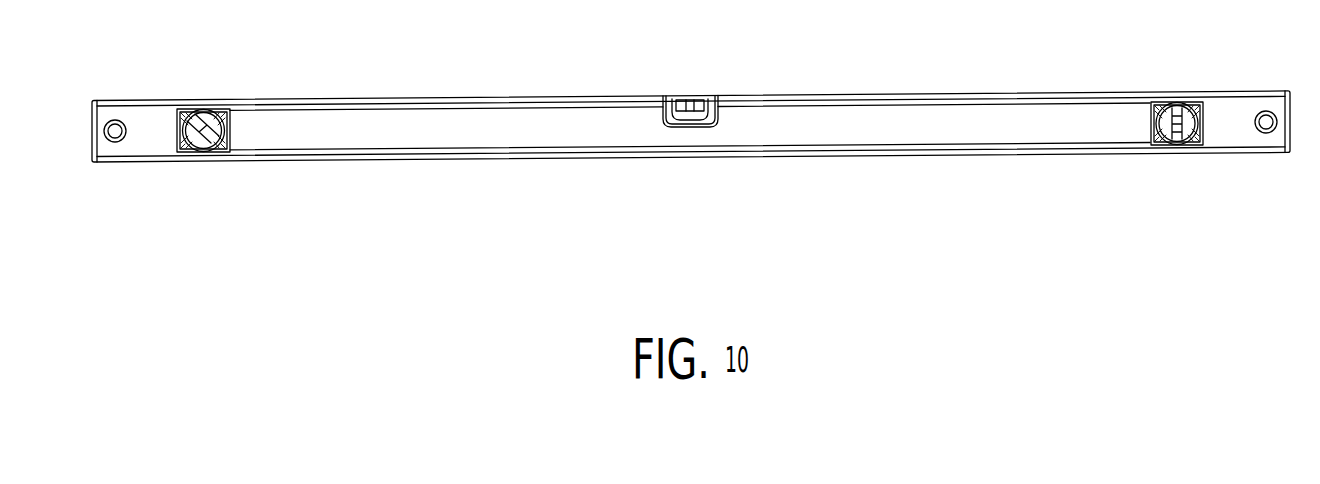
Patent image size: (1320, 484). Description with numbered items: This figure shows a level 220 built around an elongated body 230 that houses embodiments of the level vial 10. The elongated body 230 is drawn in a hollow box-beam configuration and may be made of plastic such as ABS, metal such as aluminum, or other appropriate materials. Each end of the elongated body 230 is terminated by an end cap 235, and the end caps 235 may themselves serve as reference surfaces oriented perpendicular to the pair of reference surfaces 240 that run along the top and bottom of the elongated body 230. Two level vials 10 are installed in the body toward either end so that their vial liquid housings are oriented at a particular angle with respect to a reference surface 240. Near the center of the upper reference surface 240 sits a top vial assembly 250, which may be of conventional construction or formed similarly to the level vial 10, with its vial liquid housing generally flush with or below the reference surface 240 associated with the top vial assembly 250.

The level vial 10 is at (198, 148).
The level 220 is at (983, 75).
The elongated body 230 is at (902, 132).
The end caps 235 is at (92, 131).
The reference surfaces 240 is at (808, 93).
The top vial assembly 250 is at (718, 100).